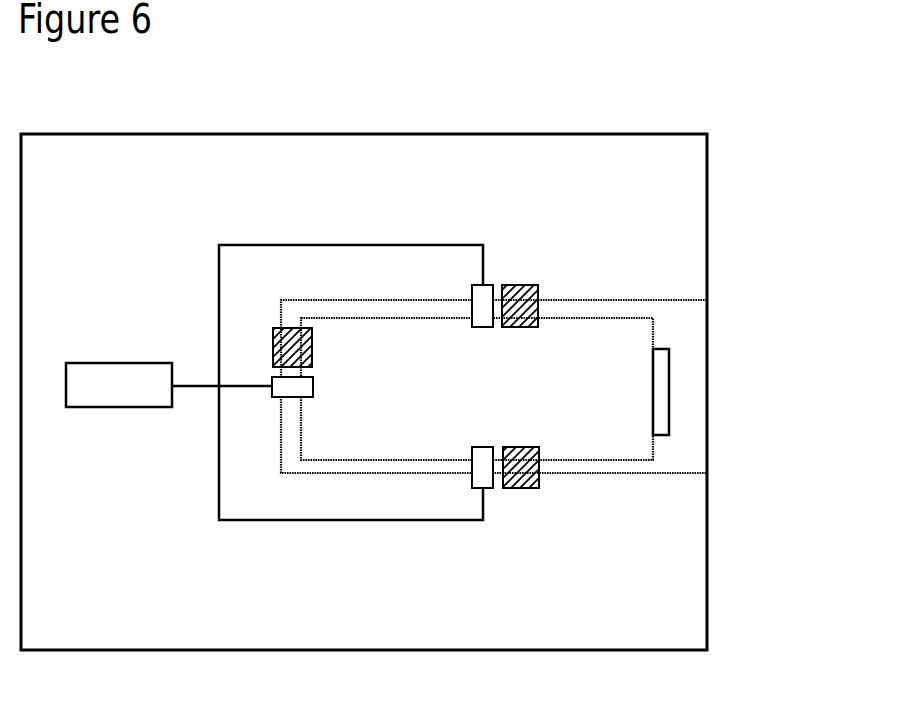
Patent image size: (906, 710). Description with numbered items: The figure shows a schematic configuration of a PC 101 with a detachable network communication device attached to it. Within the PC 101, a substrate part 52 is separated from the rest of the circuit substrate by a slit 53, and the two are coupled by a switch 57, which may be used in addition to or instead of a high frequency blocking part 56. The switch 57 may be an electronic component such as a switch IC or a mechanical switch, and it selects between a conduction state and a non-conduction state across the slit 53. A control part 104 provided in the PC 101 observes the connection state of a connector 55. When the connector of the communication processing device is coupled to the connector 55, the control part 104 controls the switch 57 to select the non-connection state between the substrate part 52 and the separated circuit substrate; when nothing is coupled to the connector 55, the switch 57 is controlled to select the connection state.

The PC 101 is at (683, 187).
The control part 104 is at (102, 407).
The substrate part 52 is at (641, 449).
The slit 53 is at (636, 466).
The connector 55 is at (658, 377).
The high frequency blocking part 56 is at (482, 478).
The switch 57 is at (530, 479).